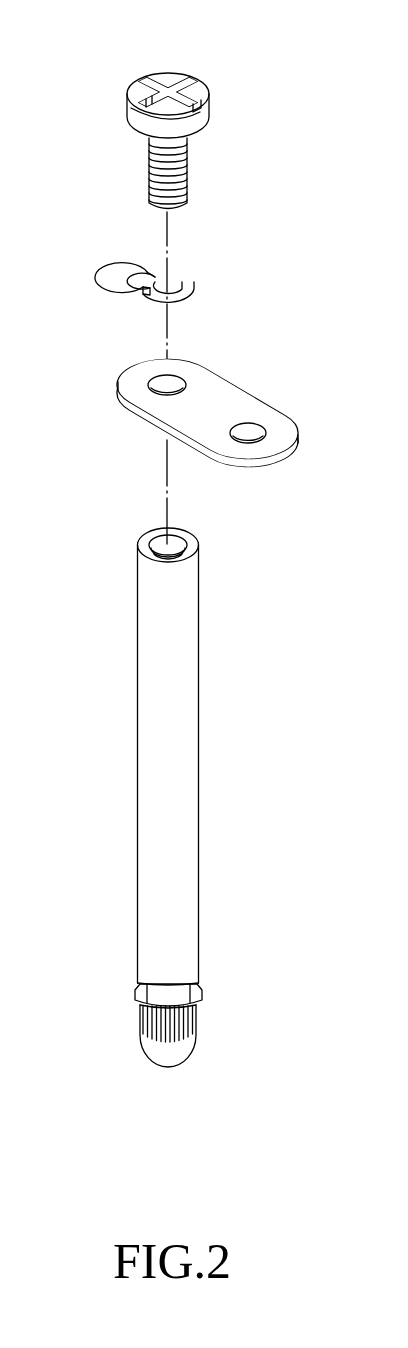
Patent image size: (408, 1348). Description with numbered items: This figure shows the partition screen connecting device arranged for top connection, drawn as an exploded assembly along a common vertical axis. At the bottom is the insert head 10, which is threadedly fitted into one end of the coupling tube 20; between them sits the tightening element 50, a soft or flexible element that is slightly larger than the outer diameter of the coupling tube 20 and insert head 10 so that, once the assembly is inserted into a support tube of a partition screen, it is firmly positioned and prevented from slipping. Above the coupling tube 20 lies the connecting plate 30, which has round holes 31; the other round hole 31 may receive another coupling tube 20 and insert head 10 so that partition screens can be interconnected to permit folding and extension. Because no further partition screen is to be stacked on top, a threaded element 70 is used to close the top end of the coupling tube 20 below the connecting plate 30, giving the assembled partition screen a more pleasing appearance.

The insert head 10 is at (180, 1057).
The coupling tube 20 is at (185, 780).
The connecting plate 30 is at (210, 385).
The round hole 31 is at (177, 380).
The tightening element 50 is at (165, 997).
The threaded element 70 is at (195, 90).